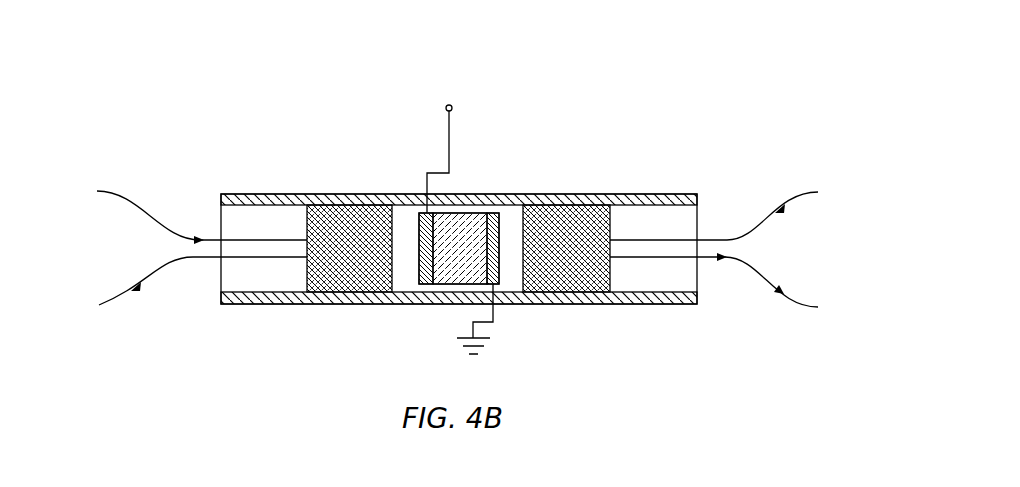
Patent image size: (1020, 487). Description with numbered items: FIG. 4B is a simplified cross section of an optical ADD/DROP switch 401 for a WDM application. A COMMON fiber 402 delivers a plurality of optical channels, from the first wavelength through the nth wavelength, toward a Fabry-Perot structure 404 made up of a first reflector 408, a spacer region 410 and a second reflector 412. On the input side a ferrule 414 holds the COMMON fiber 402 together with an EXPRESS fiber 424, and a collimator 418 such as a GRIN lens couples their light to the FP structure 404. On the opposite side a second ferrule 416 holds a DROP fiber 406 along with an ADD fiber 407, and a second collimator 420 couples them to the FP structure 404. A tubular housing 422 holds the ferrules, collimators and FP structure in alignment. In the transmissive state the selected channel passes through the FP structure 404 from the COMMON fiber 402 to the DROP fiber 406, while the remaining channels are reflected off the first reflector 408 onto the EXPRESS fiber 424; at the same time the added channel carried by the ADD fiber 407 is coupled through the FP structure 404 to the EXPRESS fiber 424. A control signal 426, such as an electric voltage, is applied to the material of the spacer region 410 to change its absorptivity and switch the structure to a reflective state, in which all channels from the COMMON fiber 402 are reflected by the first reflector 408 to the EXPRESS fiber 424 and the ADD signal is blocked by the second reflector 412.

The optical filter device 401 is at (762, 76).
The COMMON fiber 402 is at (128, 207).
The FP structure 404 is at (510, 285).
The DROP fiber 406 is at (768, 272).
The ADD fiber 407 is at (748, 230).
The first reflector 408 is at (413, 203).
The spacer region 410 is at (440, 287).
The second reflector 412 is at (495, 203).
The ferrule 414 is at (215, 278).
The second ferrule 416 is at (697, 228).
The collimator 418 is at (350, 293).
The collimator 420 is at (575, 205).
The tubular housing 422 is at (235, 195).
The EXPRESS fiber 424 is at (157, 273).
The control signal 426 is at (447, 103).